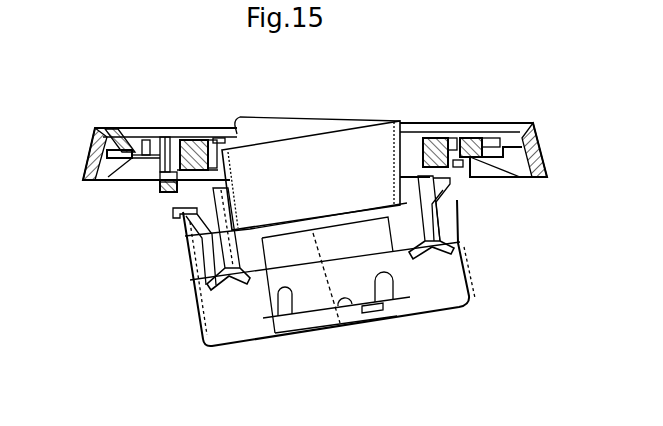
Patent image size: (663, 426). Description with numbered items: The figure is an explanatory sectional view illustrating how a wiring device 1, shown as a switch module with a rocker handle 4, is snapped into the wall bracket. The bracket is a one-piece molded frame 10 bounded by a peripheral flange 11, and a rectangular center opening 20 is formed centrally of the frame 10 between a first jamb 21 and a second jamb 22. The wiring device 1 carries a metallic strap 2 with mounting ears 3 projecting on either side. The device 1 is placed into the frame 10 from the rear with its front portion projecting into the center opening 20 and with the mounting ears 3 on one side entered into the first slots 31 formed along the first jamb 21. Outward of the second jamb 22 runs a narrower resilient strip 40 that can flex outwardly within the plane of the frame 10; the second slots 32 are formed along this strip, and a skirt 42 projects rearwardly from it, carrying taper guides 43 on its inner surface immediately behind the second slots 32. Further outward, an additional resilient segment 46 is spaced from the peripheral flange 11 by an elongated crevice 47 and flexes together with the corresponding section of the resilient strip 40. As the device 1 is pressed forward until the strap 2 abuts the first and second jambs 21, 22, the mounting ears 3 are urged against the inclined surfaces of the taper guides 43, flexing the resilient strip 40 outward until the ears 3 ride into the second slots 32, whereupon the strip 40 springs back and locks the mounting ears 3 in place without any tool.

The wiring device 1 is at (403, 120).
The metallic strap 2 is at (218, 254).
The mounting ears 3 is at (180, 212).
The rocker handle 4 is at (290, 117).
The frame 10 is at (95, 127).
The peripheral flange 11 is at (538, 160).
The center opening 20 is at (224, 138).
The first jamb 21 is at (435, 140).
The second jamb 22 is at (200, 137).
The first slots 31 is at (463, 140).
The second slots 32 is at (175, 145).
The resilient strip 40 is at (166, 140).
The skirt 42 is at (160, 182).
The taper guides 43 is at (170, 192).
The additional resilient segment 46 is at (147, 140).
The elongated crevice 47 is at (132, 150).